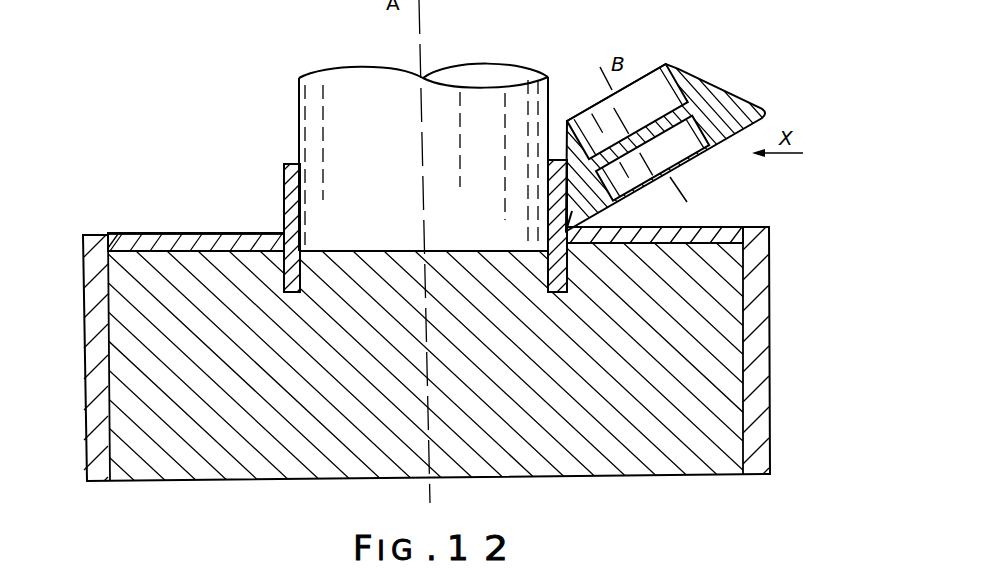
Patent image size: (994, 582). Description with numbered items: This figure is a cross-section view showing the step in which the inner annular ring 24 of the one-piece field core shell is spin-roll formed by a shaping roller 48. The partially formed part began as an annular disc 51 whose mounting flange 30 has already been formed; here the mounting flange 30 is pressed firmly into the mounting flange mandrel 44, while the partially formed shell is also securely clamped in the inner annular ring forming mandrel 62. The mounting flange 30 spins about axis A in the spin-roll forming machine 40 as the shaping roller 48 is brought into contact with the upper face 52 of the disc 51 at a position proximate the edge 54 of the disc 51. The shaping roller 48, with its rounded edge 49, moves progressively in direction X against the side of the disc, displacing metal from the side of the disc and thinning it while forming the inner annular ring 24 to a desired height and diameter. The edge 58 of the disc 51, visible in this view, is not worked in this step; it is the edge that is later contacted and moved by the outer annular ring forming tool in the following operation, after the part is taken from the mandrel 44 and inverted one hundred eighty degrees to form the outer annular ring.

The inner annular ring 24 is at (284, 200).
The mounting flange 30 is at (292, 292).
The spin-roll forming machine 40 is at (145, 152).
The mounting flange mandrel 44 is at (153, 426).
The shaping roller 48 is at (683, 72).
The rounded edge 49 is at (578, 210).
The annular disc 51 is at (208, 236).
The upper face 52 is at (706, 227).
The edge 54 is at (729, 230).
The edge 58 is at (120, 233).
The inner annular ring forming mandrel 62 is at (358, 113).